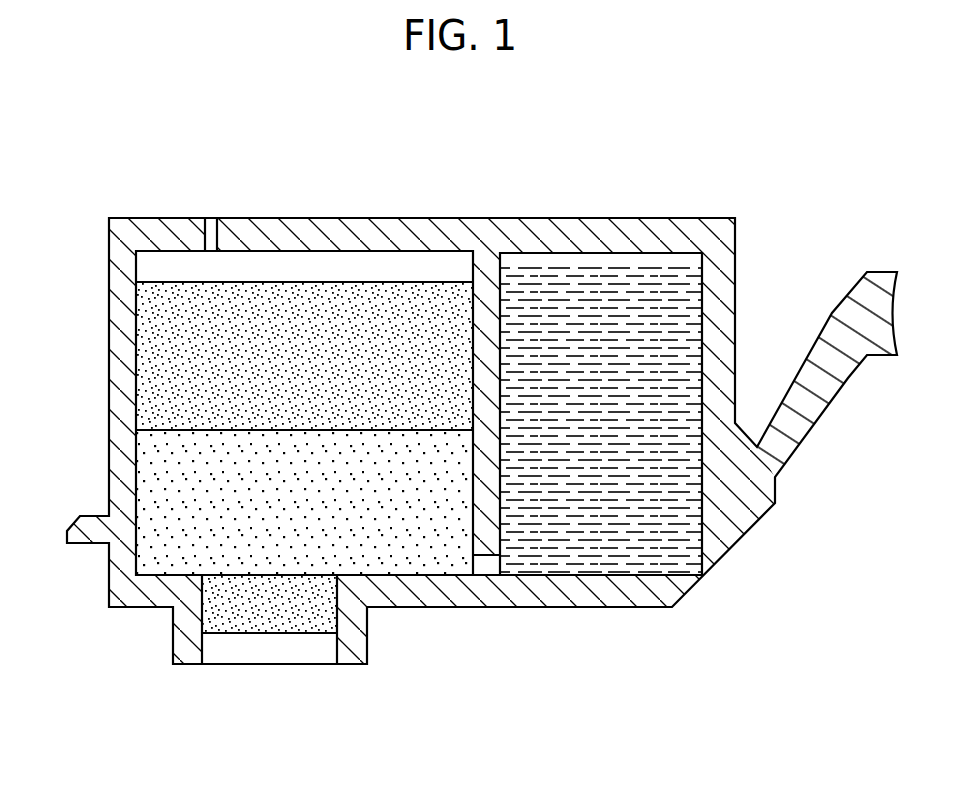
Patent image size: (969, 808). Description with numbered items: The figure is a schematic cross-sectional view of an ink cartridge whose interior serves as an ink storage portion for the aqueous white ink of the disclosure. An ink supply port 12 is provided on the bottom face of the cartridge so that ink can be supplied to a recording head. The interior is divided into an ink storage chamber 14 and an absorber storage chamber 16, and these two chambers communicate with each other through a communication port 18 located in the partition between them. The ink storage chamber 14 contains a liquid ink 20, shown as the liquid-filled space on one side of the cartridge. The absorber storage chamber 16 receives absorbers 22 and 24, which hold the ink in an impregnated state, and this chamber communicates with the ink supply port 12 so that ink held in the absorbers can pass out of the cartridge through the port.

The ink supply port 12 is at (275, 650).
The ink storage chamber 14 is at (658, 260).
The absorber storage chamber 16 is at (287, 272).
The communication port 18 is at (487, 565).
The liquid ink 20 is at (635, 535).
The absorber 22 is at (163, 473).
The absorber 24 is at (200, 355).